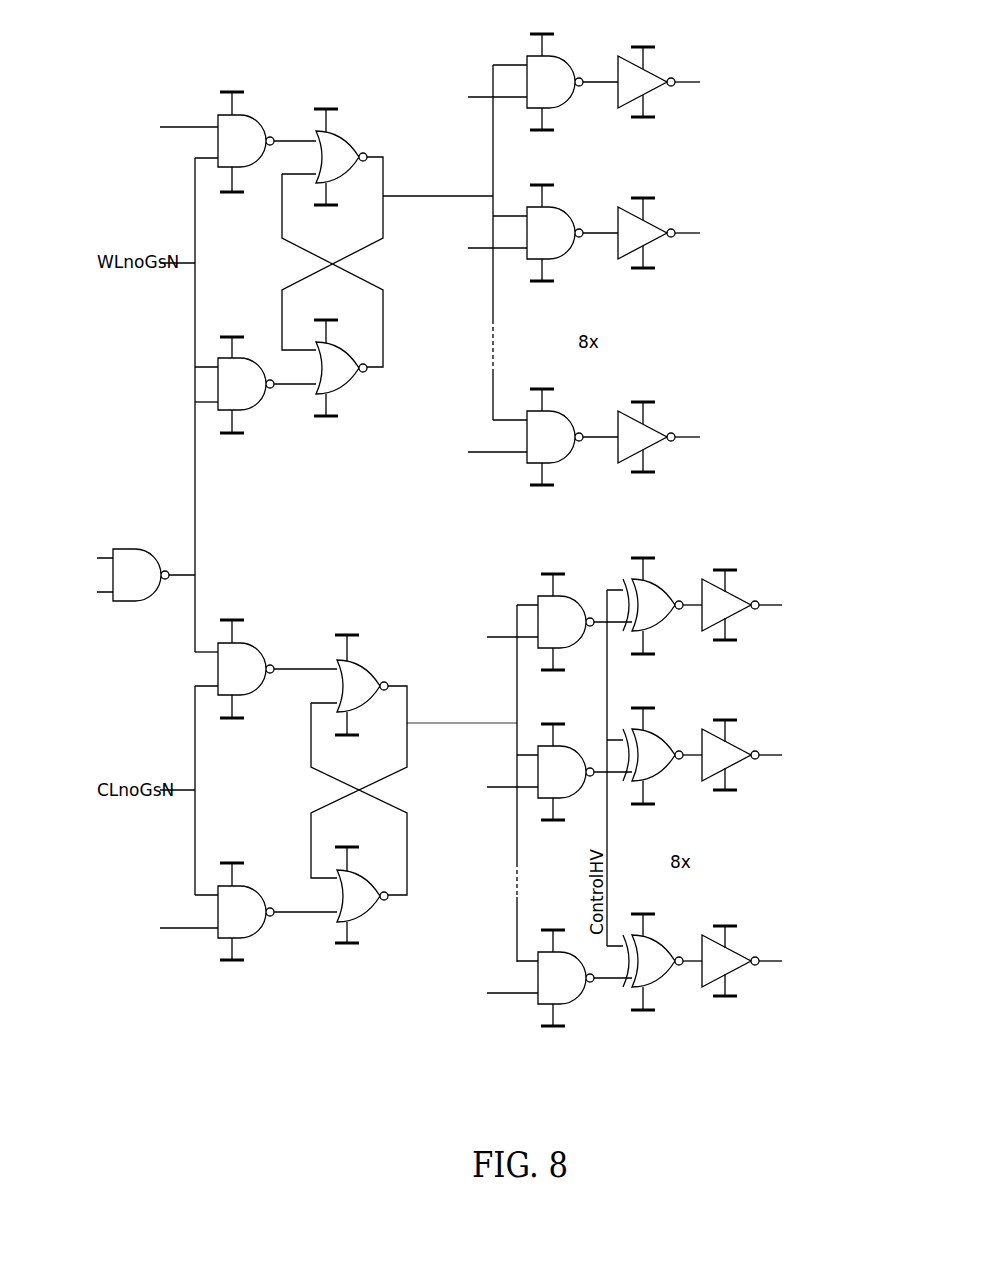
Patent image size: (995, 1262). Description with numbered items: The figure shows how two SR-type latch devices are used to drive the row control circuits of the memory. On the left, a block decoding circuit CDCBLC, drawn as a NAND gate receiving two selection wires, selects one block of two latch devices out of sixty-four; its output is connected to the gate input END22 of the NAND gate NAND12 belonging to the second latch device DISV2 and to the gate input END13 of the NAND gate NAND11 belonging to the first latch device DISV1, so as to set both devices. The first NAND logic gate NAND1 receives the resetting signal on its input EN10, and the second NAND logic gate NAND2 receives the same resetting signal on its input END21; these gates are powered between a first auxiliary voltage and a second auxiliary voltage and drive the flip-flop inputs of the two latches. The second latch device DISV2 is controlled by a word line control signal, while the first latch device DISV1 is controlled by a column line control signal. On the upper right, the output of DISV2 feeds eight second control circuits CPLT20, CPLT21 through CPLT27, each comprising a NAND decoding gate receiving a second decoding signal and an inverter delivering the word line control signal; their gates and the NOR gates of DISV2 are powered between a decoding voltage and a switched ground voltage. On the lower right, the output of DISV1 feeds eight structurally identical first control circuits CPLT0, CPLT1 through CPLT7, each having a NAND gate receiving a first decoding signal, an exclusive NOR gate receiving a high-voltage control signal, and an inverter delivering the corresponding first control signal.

The first NAND logic gate NAND1 is at (257, 132).
The gate input EN10 is at (217, 128).
The second latch device DISV2 is at (338, 58).
The NAND gate NAND12 is at (250, 392).
The gate input END22 is at (214, 400).
The block decoding circuit CDCBLC is at (138, 570).
The gate input END13 is at (215, 656).
The NAND gate NAND11 is at (243, 678).
The first latch device DISV1 is at (367, 591).
The second NAND logic gate NAND2 is at (247, 918).
The gate input END21 is at (218, 934).
The second control circuit CPLT20 is at (718, 43).
The second control circuit CPLT21 is at (718, 194).
The second control circuit CPLT27 is at (718, 398).
The first control circuit CPLT0 is at (767, 566).
The first control circuit CPLT1 is at (767, 722).
The first control circuit CPLT7 is at (767, 928).